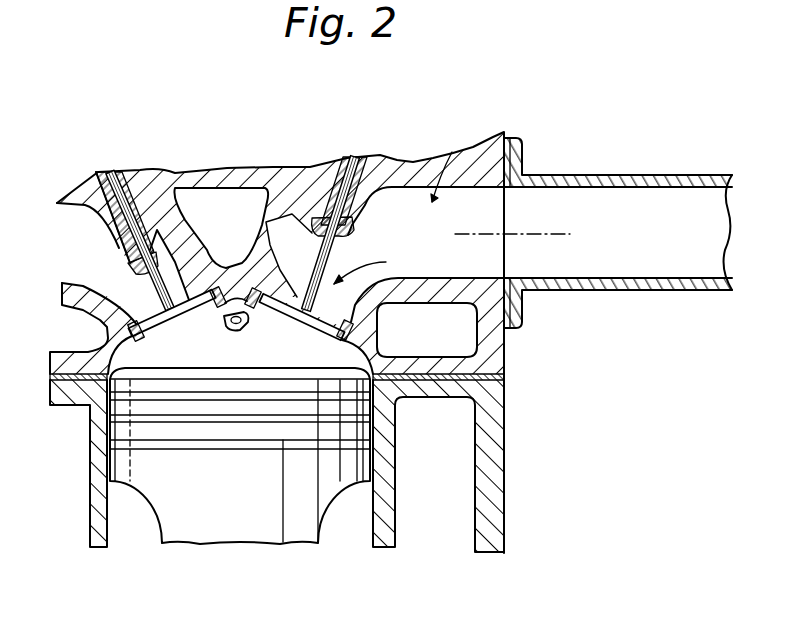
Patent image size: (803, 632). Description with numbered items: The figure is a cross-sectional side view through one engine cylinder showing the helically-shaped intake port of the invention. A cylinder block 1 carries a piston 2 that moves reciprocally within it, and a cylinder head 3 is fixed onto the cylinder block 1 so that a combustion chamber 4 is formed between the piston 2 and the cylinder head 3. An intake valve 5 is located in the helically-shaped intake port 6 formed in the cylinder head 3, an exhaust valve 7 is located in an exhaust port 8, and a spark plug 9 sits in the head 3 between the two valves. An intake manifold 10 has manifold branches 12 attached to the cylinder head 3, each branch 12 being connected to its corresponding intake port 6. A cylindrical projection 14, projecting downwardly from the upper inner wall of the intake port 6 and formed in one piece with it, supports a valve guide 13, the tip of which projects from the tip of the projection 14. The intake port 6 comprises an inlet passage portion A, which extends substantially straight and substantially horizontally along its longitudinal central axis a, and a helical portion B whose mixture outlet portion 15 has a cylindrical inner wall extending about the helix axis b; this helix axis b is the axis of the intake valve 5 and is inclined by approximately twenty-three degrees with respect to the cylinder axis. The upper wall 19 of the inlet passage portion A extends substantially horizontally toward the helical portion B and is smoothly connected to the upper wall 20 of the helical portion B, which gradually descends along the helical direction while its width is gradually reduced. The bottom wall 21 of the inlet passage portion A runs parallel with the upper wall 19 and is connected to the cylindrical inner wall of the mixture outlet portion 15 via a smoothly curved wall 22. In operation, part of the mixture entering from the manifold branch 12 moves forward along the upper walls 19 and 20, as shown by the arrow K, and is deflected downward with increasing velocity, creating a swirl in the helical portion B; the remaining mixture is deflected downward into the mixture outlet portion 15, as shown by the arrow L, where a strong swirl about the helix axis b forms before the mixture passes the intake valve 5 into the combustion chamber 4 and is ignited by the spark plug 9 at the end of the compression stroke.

The cylinder block 1 is at (498, 497).
The piston 2 is at (285, 543).
The cylinder head 3 is at (409, 163).
The combustion chamber 4 is at (268, 360).
The intake valve 5 is at (364, 159).
The helically-shaped intake port 6 is at (365, 233).
The exhaust valve 7 is at (149, 278).
The exhaust port 8 is at (81, 247).
The spark plug 9 is at (236, 325).
The intake manifold 10 is at (718, 173).
The manifold branches 12 is at (592, 178).
The valve guide 13 is at (341, 180).
The cylindrical projection 14 is at (354, 229).
The mixture outlet portion 15 is at (263, 300).
The upper wall of the inlet passage portion 19 is at (453, 192).
The upper wall of the helical portion 20 is at (294, 216).
The bottom wall of the inlet passage portion 21 is at (428, 270).
The smoothly curved wall 22 is at (378, 306).
The inlet passage portion A is at (446, 164).
The helical portion B is at (258, 221).
The arrow K is at (386, 206).
The arrow L is at (367, 267).
The longitudinal central axis a is at (550, 234).
The helix axis b is at (288, 326).